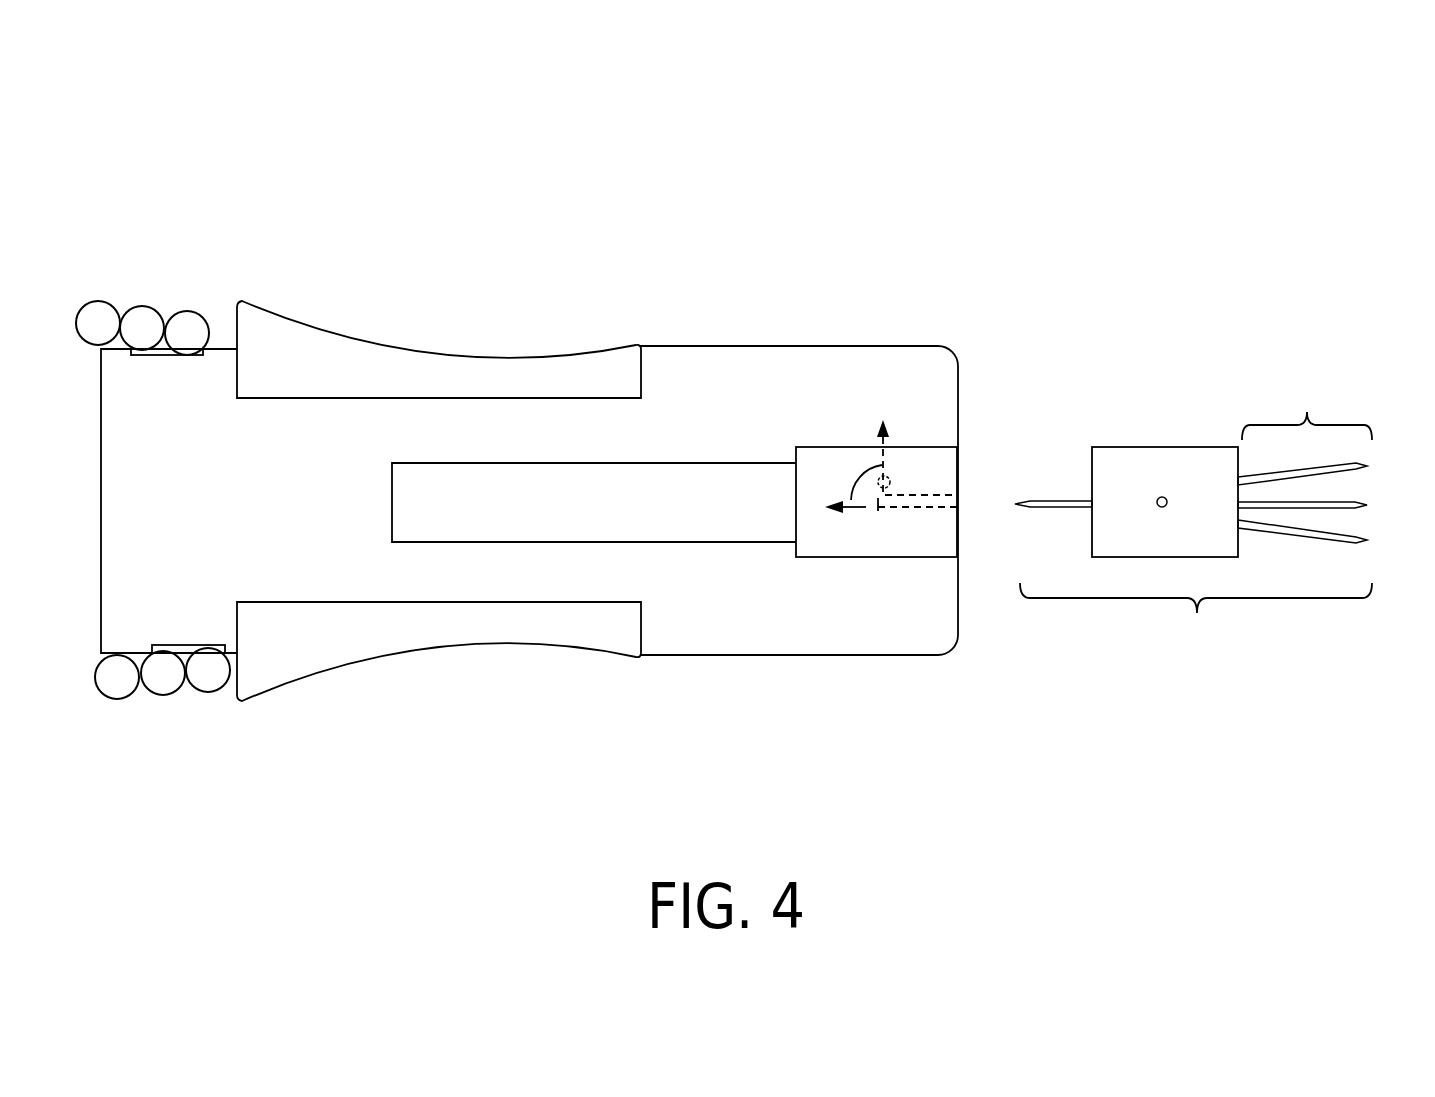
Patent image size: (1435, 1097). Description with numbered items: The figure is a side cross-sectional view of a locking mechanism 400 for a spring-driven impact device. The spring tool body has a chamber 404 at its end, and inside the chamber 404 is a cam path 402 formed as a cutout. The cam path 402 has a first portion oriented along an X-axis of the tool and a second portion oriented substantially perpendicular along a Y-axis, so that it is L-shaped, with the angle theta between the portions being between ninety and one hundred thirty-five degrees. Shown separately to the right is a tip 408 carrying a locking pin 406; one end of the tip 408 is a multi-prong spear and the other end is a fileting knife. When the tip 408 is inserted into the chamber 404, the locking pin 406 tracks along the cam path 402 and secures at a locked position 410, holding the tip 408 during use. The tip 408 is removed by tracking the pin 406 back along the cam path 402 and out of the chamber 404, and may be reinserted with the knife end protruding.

The locking mechanism 400 is at (140, 100).
The cam path 402 is at (917, 508).
The chamber 404 is at (840, 447).
The locking pin 406 is at (1162, 497).
The tip 408 is at (1197, 613).
The locked position 410 is at (901, 459).